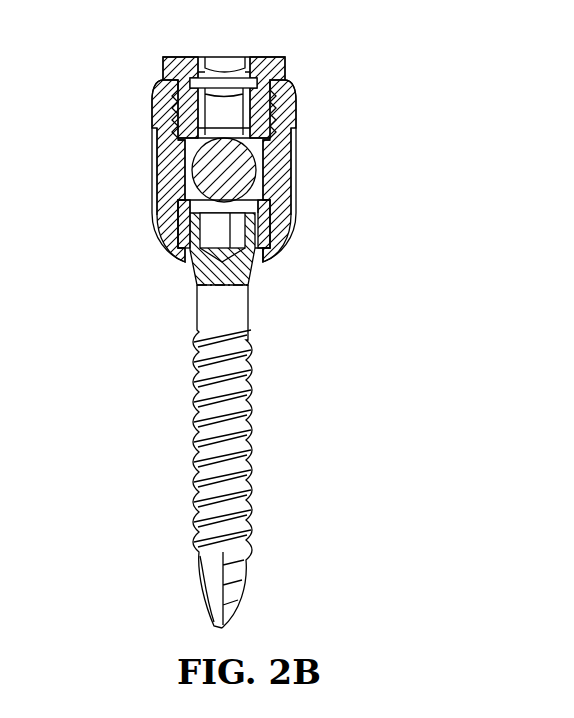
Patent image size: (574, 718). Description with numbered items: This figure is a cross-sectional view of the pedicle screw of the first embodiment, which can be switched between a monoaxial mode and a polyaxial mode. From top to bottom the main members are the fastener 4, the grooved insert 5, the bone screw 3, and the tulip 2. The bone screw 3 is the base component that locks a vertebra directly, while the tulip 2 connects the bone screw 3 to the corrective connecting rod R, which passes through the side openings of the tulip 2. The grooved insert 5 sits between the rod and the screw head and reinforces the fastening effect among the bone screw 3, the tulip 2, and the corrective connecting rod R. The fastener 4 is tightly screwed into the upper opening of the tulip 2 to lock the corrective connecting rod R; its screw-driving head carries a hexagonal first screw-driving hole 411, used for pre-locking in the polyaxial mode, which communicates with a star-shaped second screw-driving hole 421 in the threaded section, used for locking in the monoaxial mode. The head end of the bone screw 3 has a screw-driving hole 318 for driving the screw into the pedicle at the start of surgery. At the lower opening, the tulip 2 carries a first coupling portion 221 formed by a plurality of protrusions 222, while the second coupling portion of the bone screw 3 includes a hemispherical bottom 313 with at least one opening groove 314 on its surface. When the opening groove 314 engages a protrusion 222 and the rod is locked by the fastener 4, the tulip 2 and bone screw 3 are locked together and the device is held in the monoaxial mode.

The tulip 2 is at (308, 190).
The bone screw 3 is at (229, 420).
The fastener 4 is at (293, 67).
The grooved insert 5 is at (180, 208).
The corrective connecting rod R is at (205, 180).
The first screw-driving hole 411 is at (213, 55).
The second screw-driving hole 421 is at (215, 118).
The screw-driving hole 318 is at (213, 238).
The hemispherical bottom 313 is at (268, 284).
The opening groove 314 is at (253, 258).
The first coupling portion 221 is at (325, 269).
The protrusions 222 is at (258, 256).